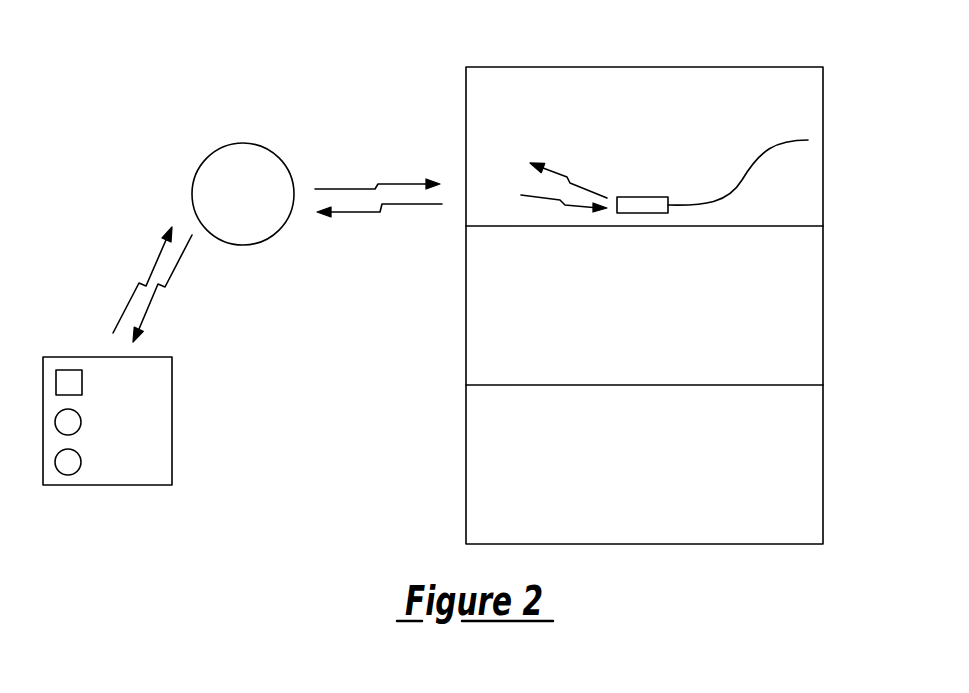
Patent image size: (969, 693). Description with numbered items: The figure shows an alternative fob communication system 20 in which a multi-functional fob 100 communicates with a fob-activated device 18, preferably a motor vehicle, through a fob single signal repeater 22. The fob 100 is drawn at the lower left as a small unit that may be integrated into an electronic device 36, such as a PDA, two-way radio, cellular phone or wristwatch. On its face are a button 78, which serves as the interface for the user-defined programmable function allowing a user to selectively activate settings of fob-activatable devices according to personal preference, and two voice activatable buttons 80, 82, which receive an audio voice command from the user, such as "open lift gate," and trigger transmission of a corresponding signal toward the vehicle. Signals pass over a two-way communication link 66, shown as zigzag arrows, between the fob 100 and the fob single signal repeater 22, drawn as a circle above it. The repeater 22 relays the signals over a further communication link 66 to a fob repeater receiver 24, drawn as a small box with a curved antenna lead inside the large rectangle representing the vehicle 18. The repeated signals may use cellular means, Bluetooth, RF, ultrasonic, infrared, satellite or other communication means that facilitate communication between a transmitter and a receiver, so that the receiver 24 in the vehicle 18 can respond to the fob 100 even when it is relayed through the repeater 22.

The fob-activated device 18 is at (849, 296).
The fob communication system 20 is at (162, 114).
The fob single signal repeater 22 is at (242, 143).
The fob repeater receiver 24 is at (808, 140).
The electronic device 36 is at (107, 485).
The communication link 66 is at (387, 182).
The button 78 is at (82, 380).
The voice activatable button 80 is at (82, 422).
The voice activatable button 82 is at (82, 462).
The multi-functional fob 100 is at (107, 470).